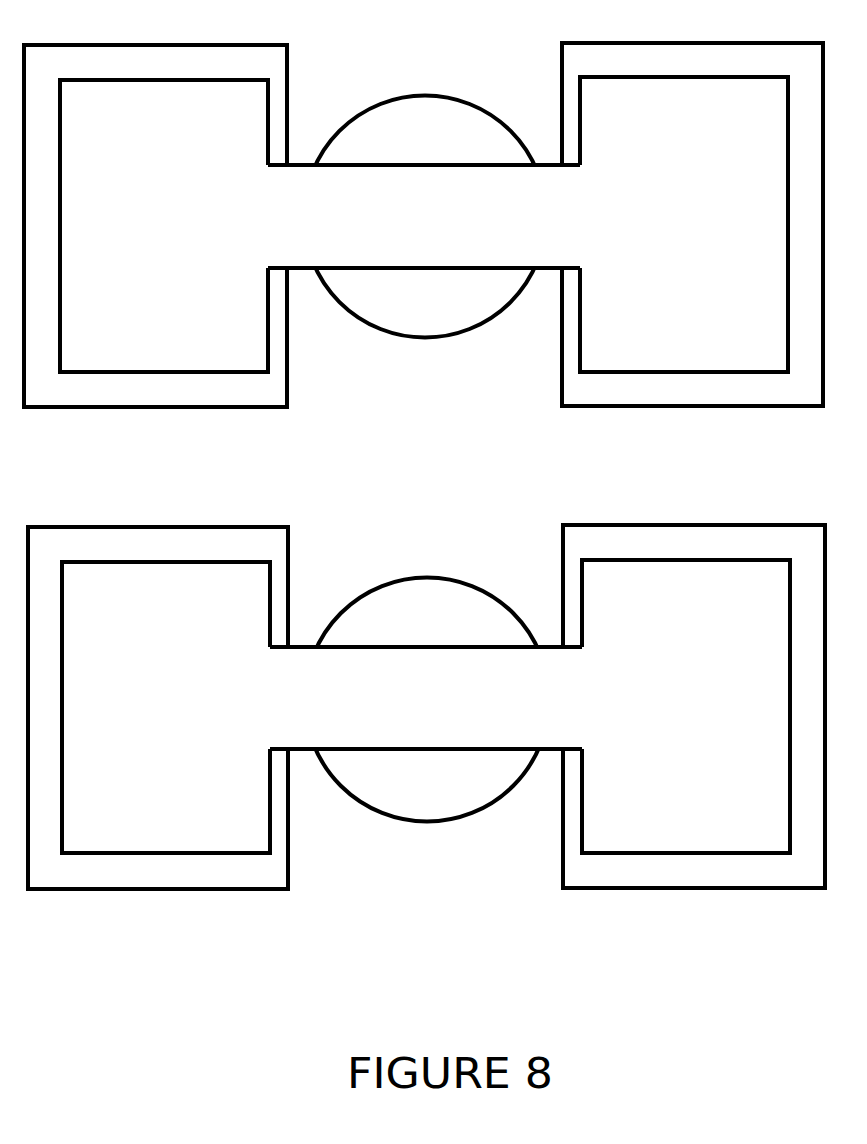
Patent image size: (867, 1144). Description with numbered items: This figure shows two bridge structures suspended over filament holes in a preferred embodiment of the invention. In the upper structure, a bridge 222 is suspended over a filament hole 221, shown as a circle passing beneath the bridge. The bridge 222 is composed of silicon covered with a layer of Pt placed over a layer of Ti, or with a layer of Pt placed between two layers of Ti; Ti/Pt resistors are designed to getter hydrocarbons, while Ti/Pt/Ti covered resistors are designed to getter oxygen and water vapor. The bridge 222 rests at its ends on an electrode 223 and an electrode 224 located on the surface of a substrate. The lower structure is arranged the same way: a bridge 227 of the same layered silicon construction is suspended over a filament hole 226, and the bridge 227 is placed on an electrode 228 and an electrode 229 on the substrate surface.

The filament hole 221 is at (465, 106).
The bridge 222 is at (612, 235).
The electrode 223 is at (157, 408).
The electrode 224 is at (694, 407).
The filament hole 226 is at (465, 588).
The bridge 227 is at (614, 717).
The electrode 228 is at (160, 890).
The electrode 229 is at (697, 889).